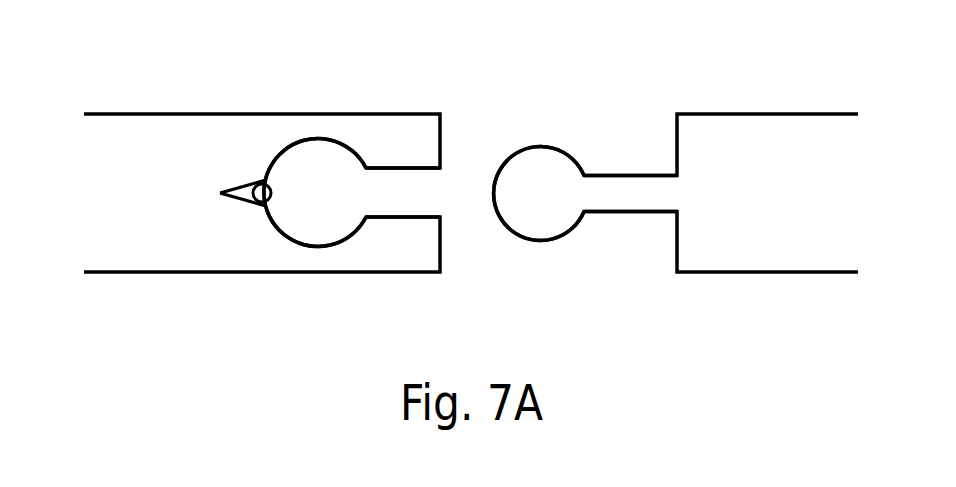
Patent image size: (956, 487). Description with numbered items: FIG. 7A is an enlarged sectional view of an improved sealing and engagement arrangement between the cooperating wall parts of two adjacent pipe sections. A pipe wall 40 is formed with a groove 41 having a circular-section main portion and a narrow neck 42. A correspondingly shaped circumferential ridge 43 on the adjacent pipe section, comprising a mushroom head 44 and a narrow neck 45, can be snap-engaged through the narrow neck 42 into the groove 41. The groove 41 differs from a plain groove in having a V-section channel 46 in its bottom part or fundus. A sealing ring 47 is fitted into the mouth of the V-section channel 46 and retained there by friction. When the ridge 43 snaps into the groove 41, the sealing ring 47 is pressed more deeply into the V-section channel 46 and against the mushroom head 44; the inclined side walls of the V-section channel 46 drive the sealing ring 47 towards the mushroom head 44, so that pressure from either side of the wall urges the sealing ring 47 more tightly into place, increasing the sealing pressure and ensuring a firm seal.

The pipe wall 40 is at (162, 125).
The groove 41 is at (310, 165).
The narrow neck 42 is at (413, 198).
The ridge 43 is at (537, 111).
The mushroom head 44 is at (547, 213).
The narrow neck 45 is at (645, 183).
The V-section channel 46 is at (243, 178).
The sealing ring 47 is at (262, 203).